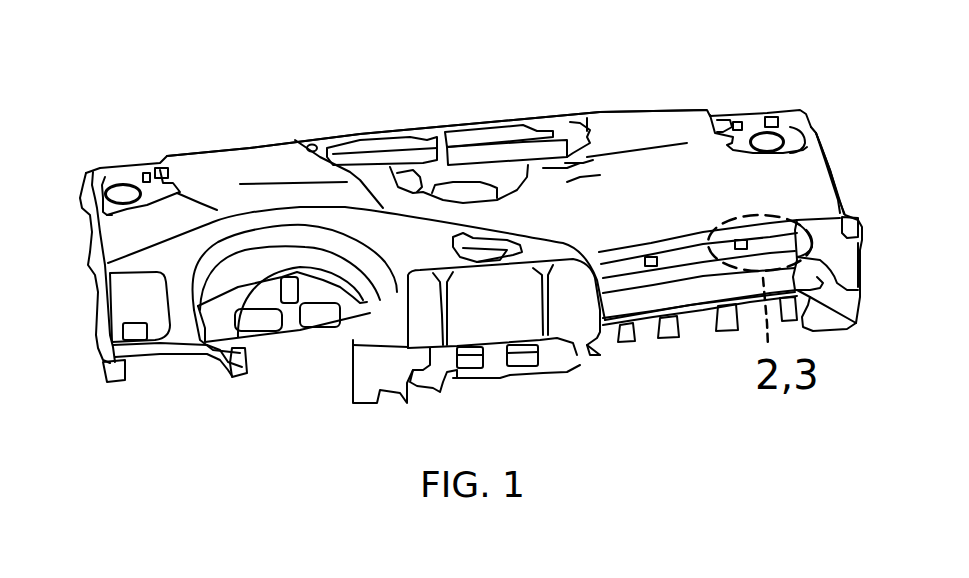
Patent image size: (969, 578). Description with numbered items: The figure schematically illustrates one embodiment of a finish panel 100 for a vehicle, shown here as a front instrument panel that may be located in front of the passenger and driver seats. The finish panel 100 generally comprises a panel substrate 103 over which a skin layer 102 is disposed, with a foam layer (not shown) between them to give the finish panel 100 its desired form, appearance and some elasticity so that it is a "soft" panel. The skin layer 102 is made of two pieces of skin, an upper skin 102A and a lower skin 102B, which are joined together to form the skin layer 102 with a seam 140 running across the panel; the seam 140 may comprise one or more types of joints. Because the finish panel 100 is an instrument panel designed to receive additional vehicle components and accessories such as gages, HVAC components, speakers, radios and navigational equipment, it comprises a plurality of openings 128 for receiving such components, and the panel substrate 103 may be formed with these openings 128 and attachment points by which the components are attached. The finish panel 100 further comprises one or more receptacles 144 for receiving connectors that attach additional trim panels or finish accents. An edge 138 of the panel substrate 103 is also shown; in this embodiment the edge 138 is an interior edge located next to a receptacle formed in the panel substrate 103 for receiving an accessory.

The finish panel 100 is at (247, 100).
The skin layer 102 is at (647, 108).
The upper skin 102A is at (807, 187).
The lower skin 102B is at (687, 252).
The panel substrate 103 is at (593, 362).
The openings 128 is at (122, 193).
The edge 138 is at (837, 290).
The seam 140 is at (687, 252).
The receptacles 144 is at (645, 257).